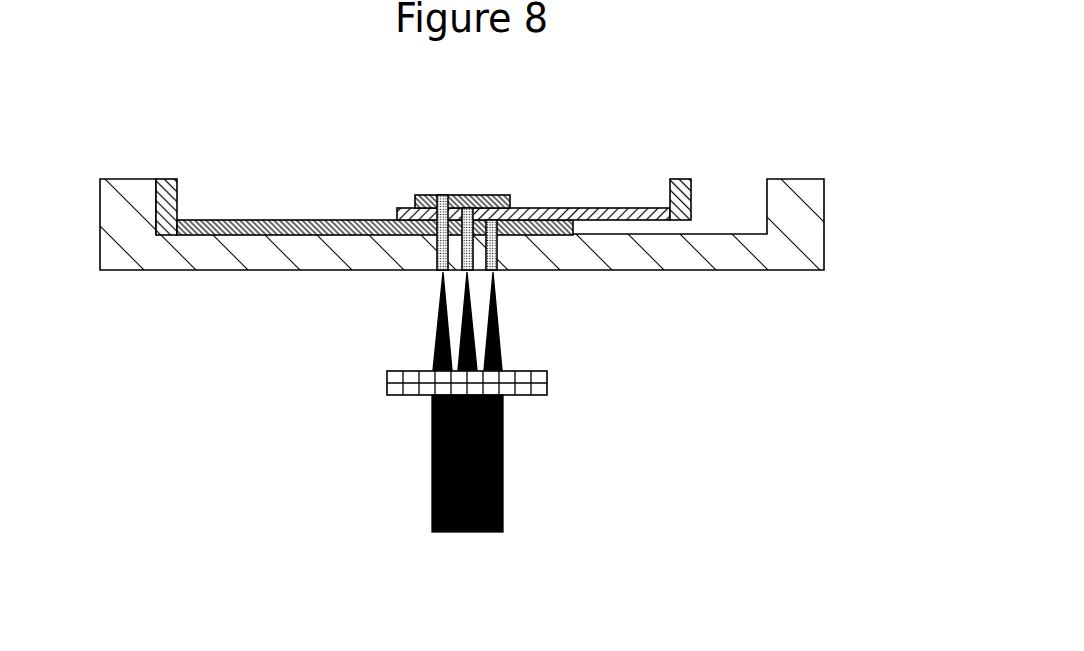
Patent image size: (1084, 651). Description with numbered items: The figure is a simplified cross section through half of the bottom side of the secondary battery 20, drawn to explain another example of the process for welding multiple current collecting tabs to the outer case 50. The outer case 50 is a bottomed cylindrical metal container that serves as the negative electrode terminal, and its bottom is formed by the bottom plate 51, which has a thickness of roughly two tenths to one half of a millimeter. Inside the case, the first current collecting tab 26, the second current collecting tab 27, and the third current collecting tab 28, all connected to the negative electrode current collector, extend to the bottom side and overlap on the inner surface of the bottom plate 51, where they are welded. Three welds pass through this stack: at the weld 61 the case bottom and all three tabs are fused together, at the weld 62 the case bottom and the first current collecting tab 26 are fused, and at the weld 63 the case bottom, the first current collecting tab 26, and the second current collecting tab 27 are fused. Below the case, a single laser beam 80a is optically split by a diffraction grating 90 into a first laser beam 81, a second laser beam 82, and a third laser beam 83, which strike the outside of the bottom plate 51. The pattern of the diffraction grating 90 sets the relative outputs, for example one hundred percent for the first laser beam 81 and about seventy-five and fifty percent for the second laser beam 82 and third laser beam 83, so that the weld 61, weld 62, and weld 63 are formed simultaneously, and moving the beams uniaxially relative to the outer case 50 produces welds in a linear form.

The secondary battery 20 is at (450, 206).
The first current collecting tab 26 is at (206, 236).
The second current collecting tab 27 is at (657, 222).
The third current collecting tab 28 is at (487, 195).
The outer case 50 is at (829, 215).
The bottom plate 51 is at (260, 271).
The weld 61 is at (437, 248).
The weld 62 is at (474, 250).
The weld 63 is at (498, 240).
The first laser beam 81 is at (438, 320).
The second laser beam 82 is at (459, 340).
The third laser beam 83 is at (502, 343).
The diffraction grating 90 is at (549, 383).
The laser beam 80a is at (503, 455).